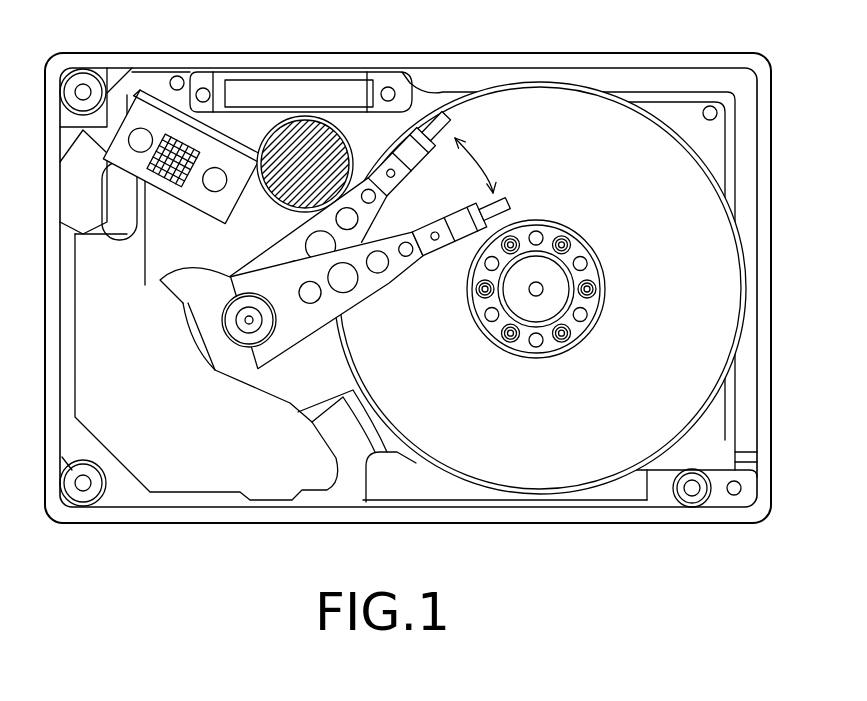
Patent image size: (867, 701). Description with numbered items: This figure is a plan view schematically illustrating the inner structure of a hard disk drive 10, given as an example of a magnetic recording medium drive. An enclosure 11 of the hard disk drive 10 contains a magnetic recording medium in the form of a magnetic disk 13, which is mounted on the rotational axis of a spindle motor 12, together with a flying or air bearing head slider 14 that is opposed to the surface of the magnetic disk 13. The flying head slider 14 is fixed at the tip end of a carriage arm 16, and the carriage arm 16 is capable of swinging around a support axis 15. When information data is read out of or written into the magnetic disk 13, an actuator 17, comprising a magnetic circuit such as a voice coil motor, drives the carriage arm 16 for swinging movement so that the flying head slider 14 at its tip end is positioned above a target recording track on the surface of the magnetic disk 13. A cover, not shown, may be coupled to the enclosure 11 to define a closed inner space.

The hard disk drive 10 is at (362, 48).
The enclosure 11 is at (570, 52).
The spindle motor 12 is at (557, 295).
The magnetic disk 13 is at (540, 442).
The flying head slider 14 is at (512, 210).
The support axis 15 is at (242, 307).
The carriage arm 16 is at (372, 293).
The actuator 17 is at (183, 448).